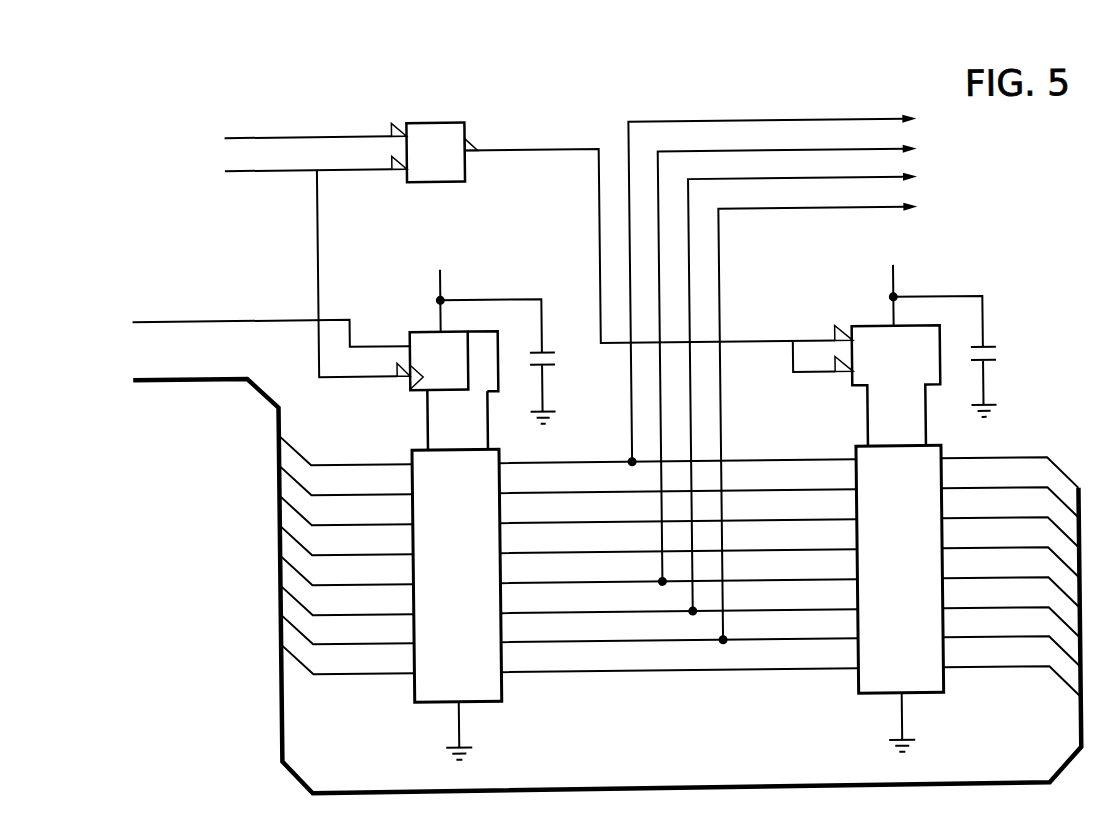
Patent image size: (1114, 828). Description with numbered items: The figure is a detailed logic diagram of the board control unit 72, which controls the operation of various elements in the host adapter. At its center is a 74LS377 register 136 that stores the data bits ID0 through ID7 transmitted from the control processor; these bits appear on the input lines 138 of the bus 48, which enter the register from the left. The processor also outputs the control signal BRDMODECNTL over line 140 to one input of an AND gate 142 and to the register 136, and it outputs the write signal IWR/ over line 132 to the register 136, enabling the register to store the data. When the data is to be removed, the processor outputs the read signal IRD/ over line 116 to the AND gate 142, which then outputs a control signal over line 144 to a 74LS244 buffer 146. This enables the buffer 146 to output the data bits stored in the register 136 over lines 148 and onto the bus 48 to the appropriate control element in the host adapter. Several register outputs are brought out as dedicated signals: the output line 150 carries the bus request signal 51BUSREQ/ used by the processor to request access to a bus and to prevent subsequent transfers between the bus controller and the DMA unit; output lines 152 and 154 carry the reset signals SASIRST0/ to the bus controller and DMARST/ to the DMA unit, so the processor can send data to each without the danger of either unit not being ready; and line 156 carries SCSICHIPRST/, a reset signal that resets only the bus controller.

The board control unit 72 is at (950, 250).
The line 116 is at (338, 133).
The line 140 is at (274, 166).
The AND gate 142 is at (434, 120).
The line 144 is at (513, 149).
The output line 150 is at (652, 121).
The output line 152 is at (660, 252).
The output line 154 is at (691, 297).
The line 156 is at (721, 429).
The line 132 is at (215, 316).
The bus 48 is at (643, 787).
The input lines 138 is at (293, 446).
The lines 148 is at (982, 670).
The 74LS377 register 136 is at (497, 700).
The 74LS244 buffer 146 is at (932, 698).